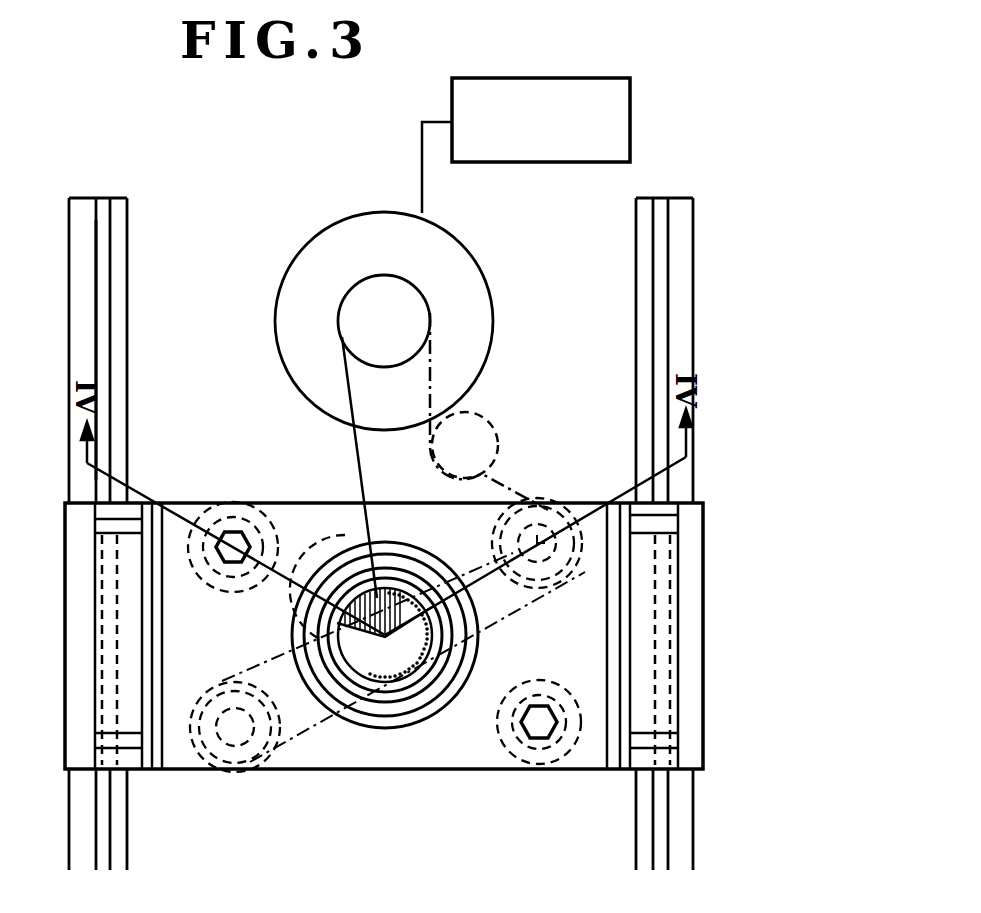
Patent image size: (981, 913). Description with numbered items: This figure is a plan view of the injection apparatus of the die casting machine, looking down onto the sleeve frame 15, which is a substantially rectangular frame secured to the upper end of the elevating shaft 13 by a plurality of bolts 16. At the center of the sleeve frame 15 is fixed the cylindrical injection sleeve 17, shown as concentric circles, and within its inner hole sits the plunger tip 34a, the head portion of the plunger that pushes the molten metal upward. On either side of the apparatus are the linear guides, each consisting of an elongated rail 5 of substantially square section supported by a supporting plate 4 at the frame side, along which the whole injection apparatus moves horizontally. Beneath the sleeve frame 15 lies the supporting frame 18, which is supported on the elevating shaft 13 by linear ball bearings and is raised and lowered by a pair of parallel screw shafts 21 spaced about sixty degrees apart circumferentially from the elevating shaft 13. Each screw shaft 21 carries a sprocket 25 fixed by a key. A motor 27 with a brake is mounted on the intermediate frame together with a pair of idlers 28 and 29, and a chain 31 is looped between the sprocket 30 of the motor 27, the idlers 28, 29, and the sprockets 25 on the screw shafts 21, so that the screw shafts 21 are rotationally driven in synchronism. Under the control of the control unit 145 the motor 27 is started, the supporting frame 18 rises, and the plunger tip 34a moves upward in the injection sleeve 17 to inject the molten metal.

The supporting plate 4 is at (128, 285).
The rail 5 is at (107, 347).
The elevating shaft 13 is at (212, 508).
The sleeve frame 15 is at (335, 755).
The bolts 16 is at (233, 530).
The injection sleeve 17 is at (413, 712).
The supporting frame 18 is at (200, 752).
The screw shafts 21 is at (550, 505).
The sprocket 25 is at (566, 568).
The motor 27 is at (490, 296).
The idler 28 is at (498, 440).
The idler 29 is at (313, 530).
The sprocket 30 is at (428, 298).
The chain 31 is at (432, 368).
The plunger tip 34a is at (388, 655).
The control unit 145 is at (630, 98).